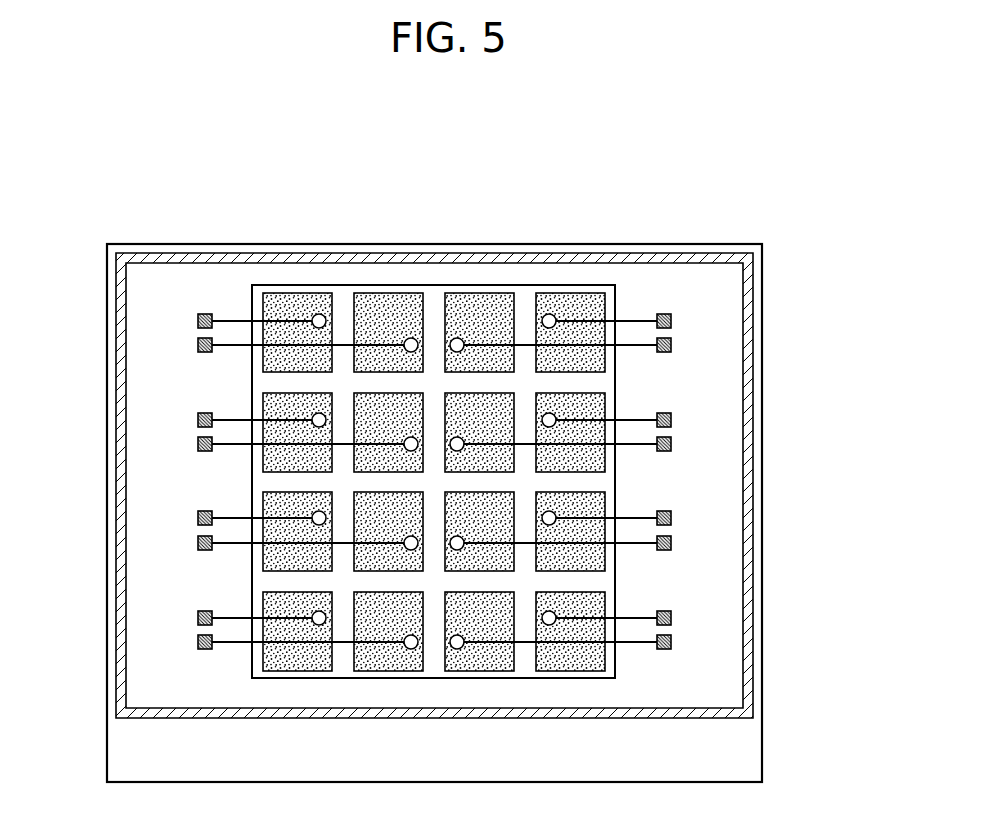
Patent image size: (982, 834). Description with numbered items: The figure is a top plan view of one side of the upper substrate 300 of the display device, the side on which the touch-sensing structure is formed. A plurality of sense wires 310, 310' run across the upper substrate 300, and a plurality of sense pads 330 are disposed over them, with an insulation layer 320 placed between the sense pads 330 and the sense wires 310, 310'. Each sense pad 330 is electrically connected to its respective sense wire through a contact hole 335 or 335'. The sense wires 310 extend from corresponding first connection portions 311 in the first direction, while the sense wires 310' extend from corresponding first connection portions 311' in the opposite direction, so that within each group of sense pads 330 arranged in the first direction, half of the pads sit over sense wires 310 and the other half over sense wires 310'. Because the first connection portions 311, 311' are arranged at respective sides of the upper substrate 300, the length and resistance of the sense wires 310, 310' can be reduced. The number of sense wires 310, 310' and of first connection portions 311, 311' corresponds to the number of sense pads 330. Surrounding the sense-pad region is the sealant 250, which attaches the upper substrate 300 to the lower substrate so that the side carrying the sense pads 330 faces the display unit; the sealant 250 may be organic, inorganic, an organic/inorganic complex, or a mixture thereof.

The sealant 250 is at (752, 576).
The upper substrate 300 is at (762, 653).
The sense wire 310 is at (227, 493).
The sense wire 310' is at (650, 493).
The first connection portion 311 is at (181, 466).
The first connection portion 311' is at (696, 467).
The insulation layer 320 is at (268, 285).
The sense pad 330 is at (300, 293).
The contact hole 335 is at (367, 414).
The contact hole 335' is at (503, 414).